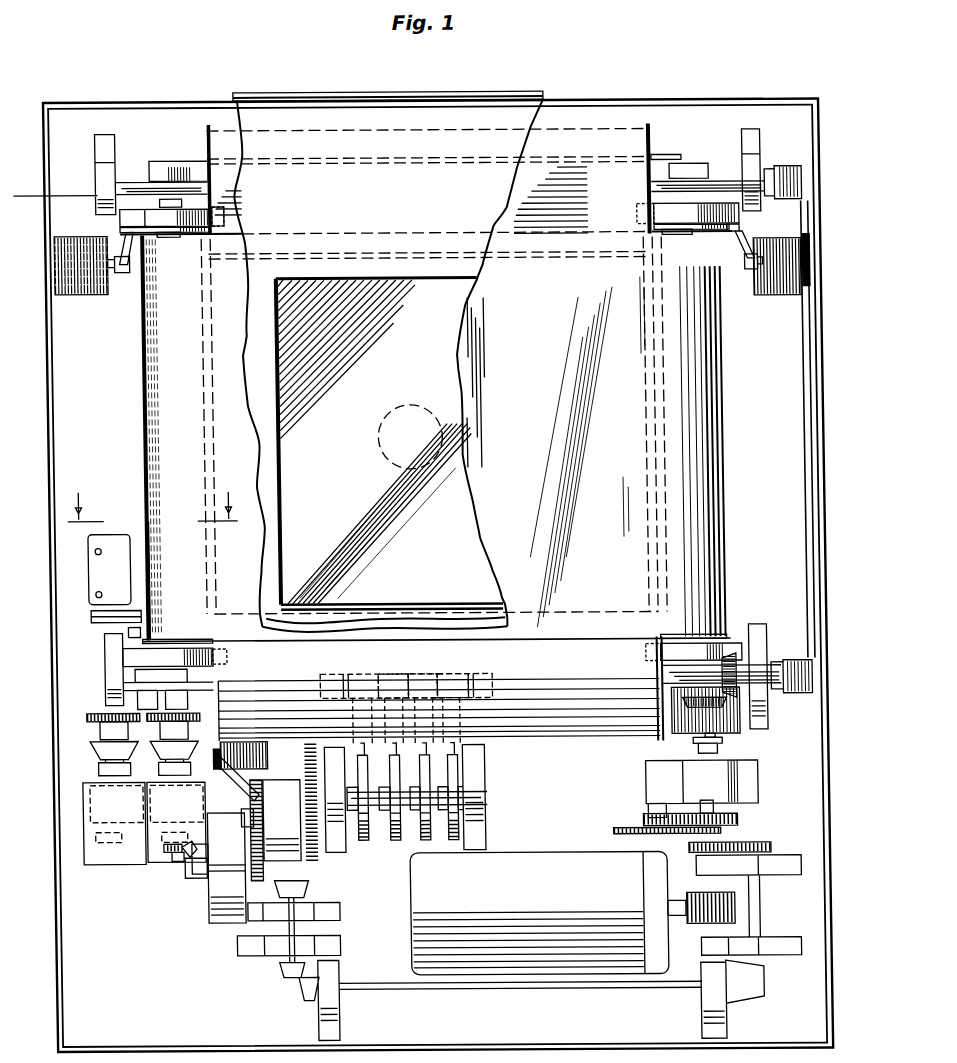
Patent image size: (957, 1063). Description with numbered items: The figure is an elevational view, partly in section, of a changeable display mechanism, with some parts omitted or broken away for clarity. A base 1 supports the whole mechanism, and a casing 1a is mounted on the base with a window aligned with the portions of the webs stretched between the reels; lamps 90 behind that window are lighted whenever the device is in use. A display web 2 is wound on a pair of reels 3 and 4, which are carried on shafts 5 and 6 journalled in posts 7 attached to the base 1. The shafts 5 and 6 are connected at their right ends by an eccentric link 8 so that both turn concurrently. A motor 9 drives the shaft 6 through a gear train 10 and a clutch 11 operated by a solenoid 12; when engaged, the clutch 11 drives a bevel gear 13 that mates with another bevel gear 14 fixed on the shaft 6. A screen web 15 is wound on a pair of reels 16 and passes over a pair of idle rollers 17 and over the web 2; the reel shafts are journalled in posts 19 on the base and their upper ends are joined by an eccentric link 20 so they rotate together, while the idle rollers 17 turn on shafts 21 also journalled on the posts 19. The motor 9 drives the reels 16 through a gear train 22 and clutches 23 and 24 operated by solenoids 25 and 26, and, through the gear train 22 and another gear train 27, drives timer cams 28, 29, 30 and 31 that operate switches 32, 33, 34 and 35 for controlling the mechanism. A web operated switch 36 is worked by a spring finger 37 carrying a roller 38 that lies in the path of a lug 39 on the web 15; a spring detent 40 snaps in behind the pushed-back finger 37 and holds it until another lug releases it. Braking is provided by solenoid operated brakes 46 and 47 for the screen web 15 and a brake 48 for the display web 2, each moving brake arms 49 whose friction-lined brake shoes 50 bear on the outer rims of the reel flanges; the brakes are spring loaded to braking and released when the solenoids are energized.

The base 1 is at (144, 118).
The casing 1a is at (364, 95).
The display web 2 is at (587, 178).
The reel 3 is at (652, 138).
The reel 4 is at (647, 717).
The shaft 5 is at (718, 178).
The shaft 6 is at (655, 675).
The post 7 is at (97, 172).
The eccentric link 8 is at (795, 418).
The motor 9 is at (398, 913).
The gear train 10 is at (737, 836).
The clutch 11 is at (733, 749).
The solenoid 12 is at (667, 717).
The bevel gear 13 is at (720, 704).
The bevel gear 14 is at (713, 659).
The screen web 15 is at (153, 422).
The reel 16 is at (452, 484).
The idle roller 17 is at (167, 236).
The post 19 is at (145, 218).
The eccentric link 20 is at (183, 148).
The shaft 21 is at (182, 237).
The gear train 22 is at (207, 948).
The clutch 23 is at (90, 746).
The clutch 24 is at (190, 735).
The solenoid 25 is at (80, 792).
The solenoid 26 is at (152, 850).
The gear train 27 is at (307, 877).
The timer cam 28 is at (354, 843).
The timer cam 29 is at (384, 843).
The timer cam 30 is at (415, 843).
The timer cam 31 is at (443, 843).
The switch 32 is at (359, 665).
The switch 33 is at (384, 676).
The switch 34 is at (418, 676).
The switch 35 is at (455, 665).
The web operated switch 36 is at (80, 561).
The spring finger 37 is at (120, 629).
The roller 38 is at (143, 603).
The lug 39 is at (156, 620).
The spring detent 40 is at (90, 607).
The solenoid operated brake 46 is at (72, 296).
The solenoid operated brake 47 is at (778, 300).
The solenoid operated brake 48 is at (275, 753).
The brake arm 49 is at (120, 277).
The brake shoe 50 is at (135, 224).
The lamp 90 is at (375, 446).